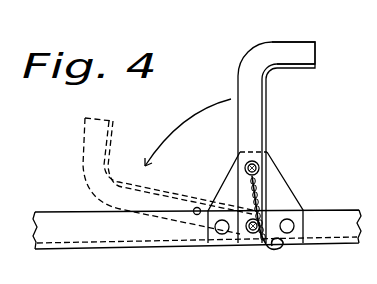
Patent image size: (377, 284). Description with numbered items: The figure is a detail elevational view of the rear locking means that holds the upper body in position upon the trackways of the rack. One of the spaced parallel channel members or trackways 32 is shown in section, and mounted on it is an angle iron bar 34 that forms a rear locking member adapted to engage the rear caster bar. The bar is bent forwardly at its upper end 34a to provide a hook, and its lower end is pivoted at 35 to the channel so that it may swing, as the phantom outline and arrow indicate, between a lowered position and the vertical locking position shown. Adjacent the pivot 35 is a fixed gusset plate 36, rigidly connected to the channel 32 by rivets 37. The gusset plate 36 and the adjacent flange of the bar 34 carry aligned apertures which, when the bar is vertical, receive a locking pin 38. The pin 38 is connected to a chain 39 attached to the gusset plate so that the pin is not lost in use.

The channel member or trackway 32 is at (70, 221).
The angle iron bar 34 is at (250, 78).
The upper end 34a is at (303, 50).
The pivot 35 is at (252, 232).
The gusset plate 36 is at (280, 175).
The rivets 37 is at (219, 230).
The locking pin 38 is at (257, 160).
The chain 39 is at (258, 196).